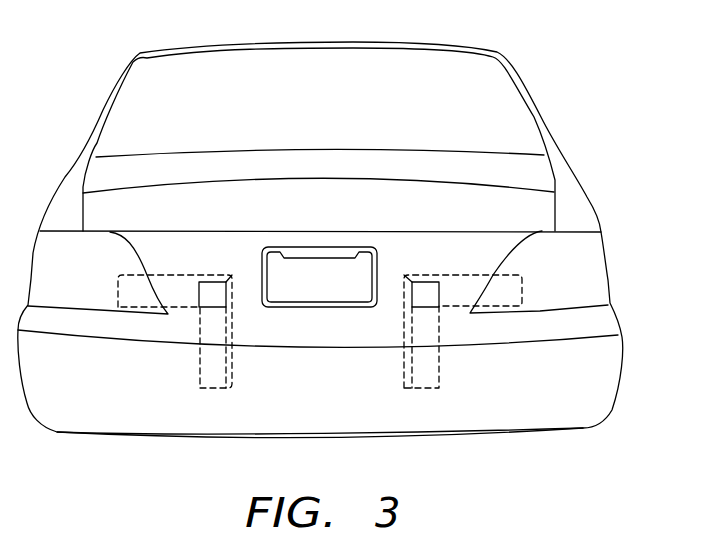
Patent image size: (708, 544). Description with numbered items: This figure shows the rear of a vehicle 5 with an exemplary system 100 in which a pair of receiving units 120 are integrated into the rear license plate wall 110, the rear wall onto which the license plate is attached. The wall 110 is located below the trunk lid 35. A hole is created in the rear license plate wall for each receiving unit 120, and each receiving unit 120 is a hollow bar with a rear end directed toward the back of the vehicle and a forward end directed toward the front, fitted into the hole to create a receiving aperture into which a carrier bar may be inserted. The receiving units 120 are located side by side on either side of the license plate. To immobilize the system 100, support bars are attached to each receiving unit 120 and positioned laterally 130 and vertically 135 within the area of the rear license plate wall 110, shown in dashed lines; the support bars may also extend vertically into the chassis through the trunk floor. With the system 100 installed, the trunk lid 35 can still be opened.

The vehicle 5 is at (540, 63).
The trunk lid 35 is at (536, 208).
The system 100 is at (217, 262).
The rear license plate wall 110 is at (315, 307).
The receiving unit 120 is at (402, 303).
The laterally positioned support bar 130 is at (522, 293).
The vertically positioned support bar 135 is at (424, 390).